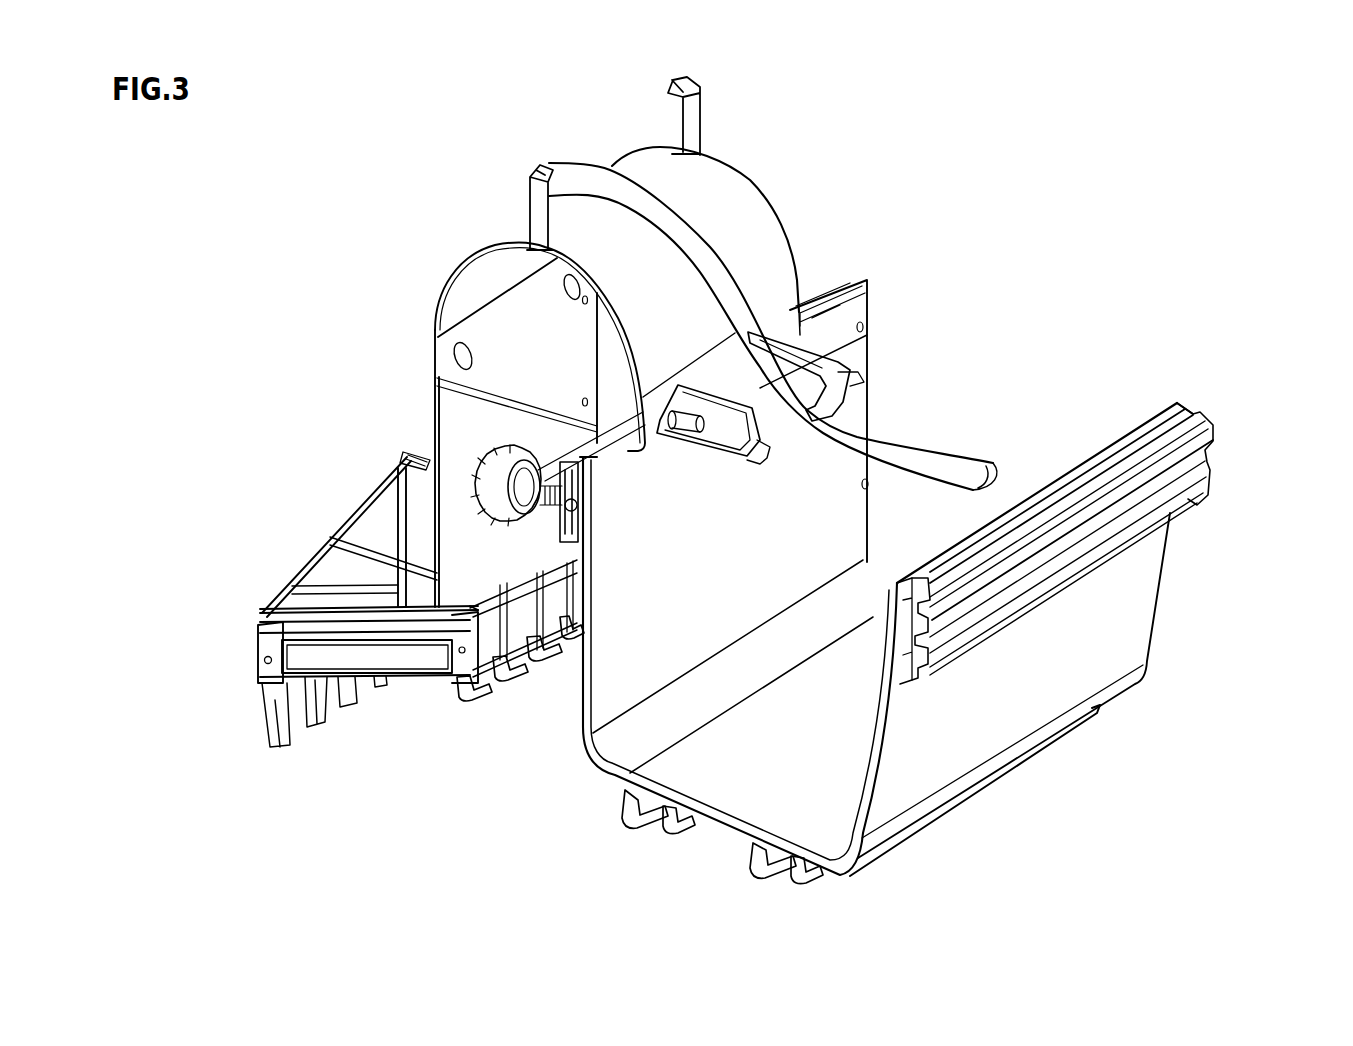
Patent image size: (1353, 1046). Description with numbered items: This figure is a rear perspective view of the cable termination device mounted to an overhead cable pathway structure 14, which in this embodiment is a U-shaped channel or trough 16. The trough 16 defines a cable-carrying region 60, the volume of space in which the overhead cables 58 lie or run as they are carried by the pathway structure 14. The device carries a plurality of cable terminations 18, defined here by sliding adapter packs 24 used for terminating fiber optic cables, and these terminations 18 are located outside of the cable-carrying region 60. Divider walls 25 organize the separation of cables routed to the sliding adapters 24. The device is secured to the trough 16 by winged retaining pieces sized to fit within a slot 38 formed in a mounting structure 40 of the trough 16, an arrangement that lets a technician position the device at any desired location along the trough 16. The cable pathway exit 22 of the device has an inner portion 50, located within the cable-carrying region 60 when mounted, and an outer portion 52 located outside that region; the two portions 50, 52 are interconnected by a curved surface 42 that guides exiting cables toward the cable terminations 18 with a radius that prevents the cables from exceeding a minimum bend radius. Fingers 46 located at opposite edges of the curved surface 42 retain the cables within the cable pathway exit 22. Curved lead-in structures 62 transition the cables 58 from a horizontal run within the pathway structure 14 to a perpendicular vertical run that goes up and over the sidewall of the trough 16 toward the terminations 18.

The overhead cable pathway structure 14 is at (1229, 408).
The U-shaped channel or trough 16 is at (1138, 592).
The cable terminations 18 is at (236, 640).
The cable pathway exit 22 is at (731, 257).
The sliding adapter packs 24 is at (251, 678).
The divider walls 25 is at (367, 498).
The slot 38 is at (580, 494).
The mounting structure 40 is at (1063, 527).
The curved surface 42 is at (758, 220).
The fingers 46 is at (530, 205).
The inner portion 50 is at (869, 283).
The outer portion 52 is at (446, 271).
The overhead cables 58 is at (576, 160).
The cable-carrying region 60 is at (721, 606).
The curved lead-in structures 62 is at (841, 362).